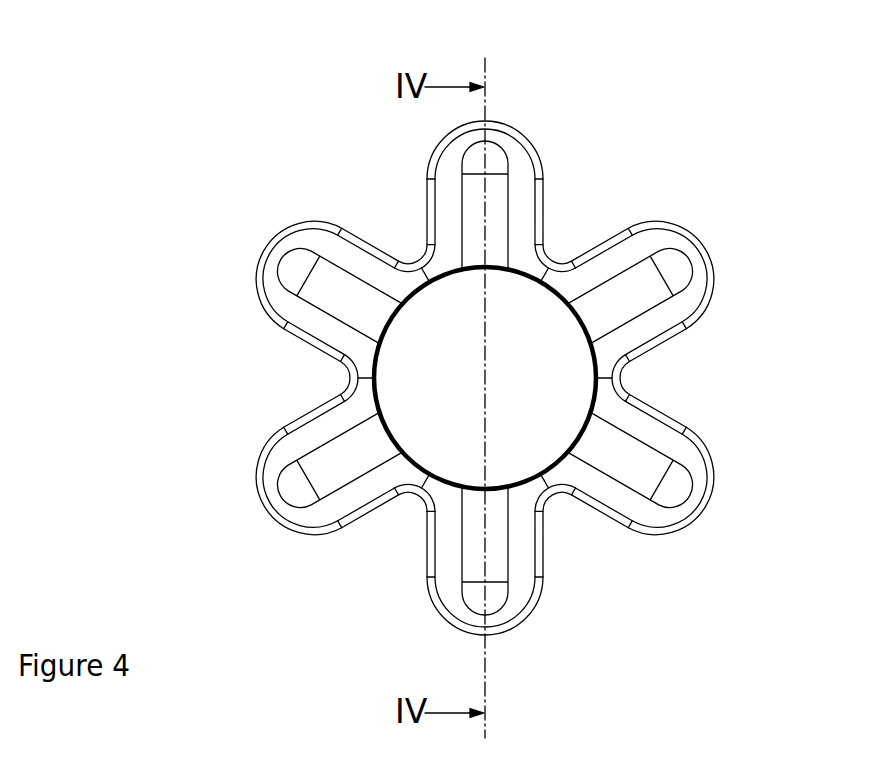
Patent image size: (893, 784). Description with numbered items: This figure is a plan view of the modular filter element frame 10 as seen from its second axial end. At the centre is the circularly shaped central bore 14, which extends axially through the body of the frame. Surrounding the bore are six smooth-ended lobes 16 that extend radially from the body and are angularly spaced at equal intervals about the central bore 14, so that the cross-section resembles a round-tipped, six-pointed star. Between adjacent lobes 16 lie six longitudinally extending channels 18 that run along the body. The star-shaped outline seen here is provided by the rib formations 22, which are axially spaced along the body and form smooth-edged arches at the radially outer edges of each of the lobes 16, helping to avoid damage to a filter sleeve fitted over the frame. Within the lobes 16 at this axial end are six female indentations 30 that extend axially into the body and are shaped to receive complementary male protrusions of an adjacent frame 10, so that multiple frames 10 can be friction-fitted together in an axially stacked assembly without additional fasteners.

The modular filter element frame 10 is at (205, 166).
The central bore 14 is at (455, 390).
The lobes 16 is at (300, 440).
The channels 18 is at (578, 205).
The rib formations 22 is at (705, 445).
The female indentations 30 is at (634, 269).